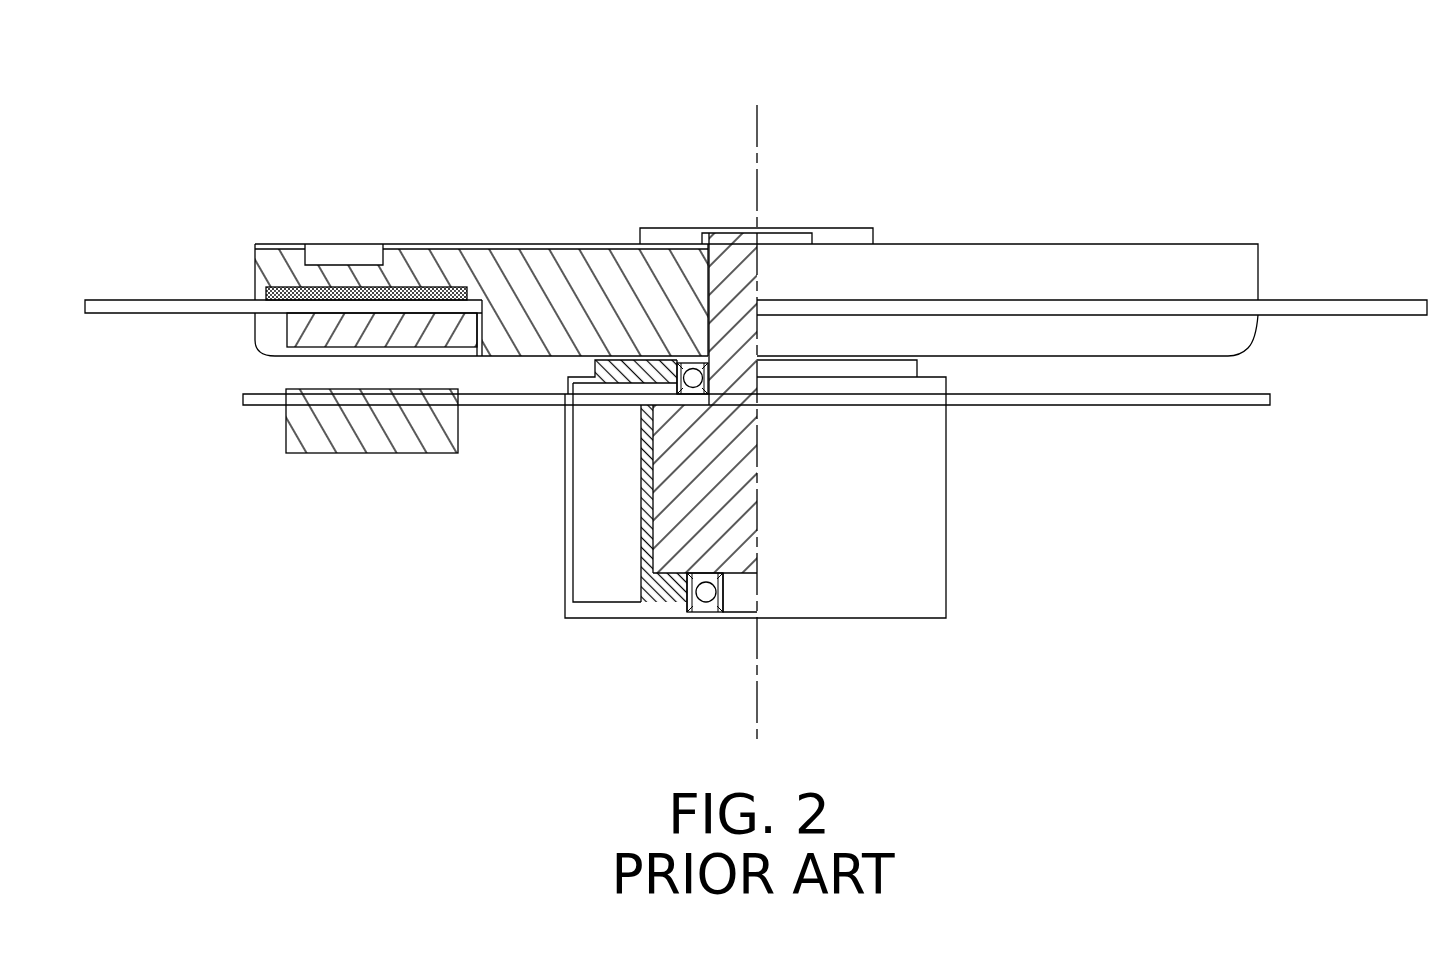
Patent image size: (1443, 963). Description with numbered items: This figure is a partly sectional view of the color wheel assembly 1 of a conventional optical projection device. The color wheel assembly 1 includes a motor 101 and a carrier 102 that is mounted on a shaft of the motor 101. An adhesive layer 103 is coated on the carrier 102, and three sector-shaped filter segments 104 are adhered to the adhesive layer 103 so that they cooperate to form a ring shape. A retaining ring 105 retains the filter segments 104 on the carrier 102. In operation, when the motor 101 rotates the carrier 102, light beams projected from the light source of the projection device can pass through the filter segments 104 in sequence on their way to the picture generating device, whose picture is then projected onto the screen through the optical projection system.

The color wheel assembly 1 is at (1073, 174).
The motor 101 is at (920, 545).
The carrier 102 is at (572, 252).
The adhesive layer 103 is at (323, 267).
The filter segments 104 is at (163, 307).
The retaining ring 105 is at (283, 333).